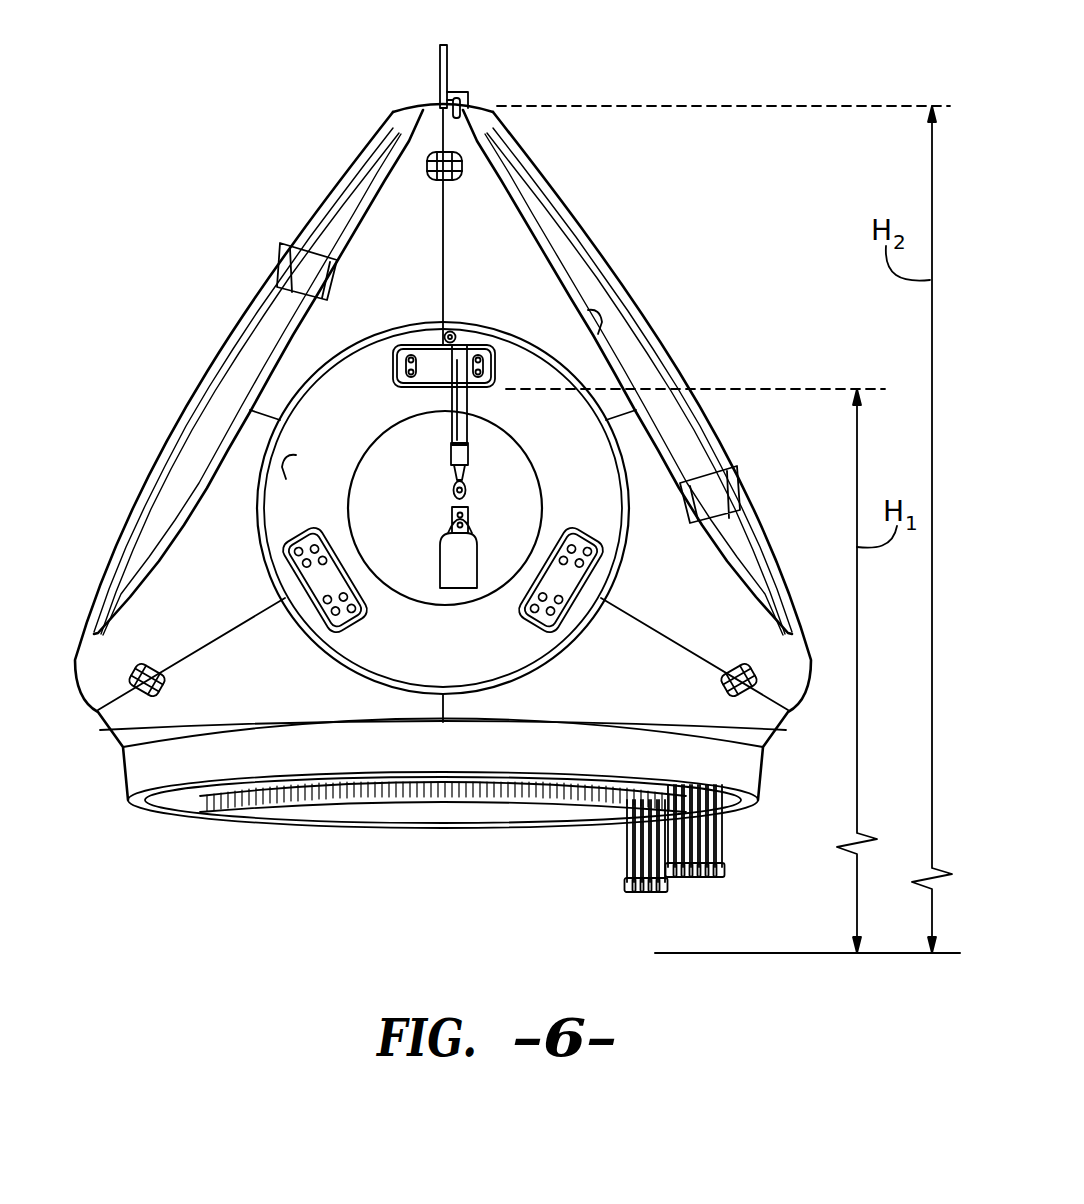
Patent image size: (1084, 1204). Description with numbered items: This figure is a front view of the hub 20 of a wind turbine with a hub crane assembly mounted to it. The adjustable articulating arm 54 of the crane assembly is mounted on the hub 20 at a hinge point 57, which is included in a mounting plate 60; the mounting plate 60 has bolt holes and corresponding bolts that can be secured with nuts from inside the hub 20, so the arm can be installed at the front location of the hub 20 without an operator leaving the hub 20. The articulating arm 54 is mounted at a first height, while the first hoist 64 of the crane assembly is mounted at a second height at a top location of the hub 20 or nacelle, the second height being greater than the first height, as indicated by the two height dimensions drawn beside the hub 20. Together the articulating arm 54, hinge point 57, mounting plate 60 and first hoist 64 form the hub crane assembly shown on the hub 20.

The hub 20 is at (80, 700).
The adjustable articulating arm 54 is at (446, 399).
The hinge point 57 is at (458, 362).
The mounting plate 60 is at (432, 362).
The first hoist 64 is at (437, 77).